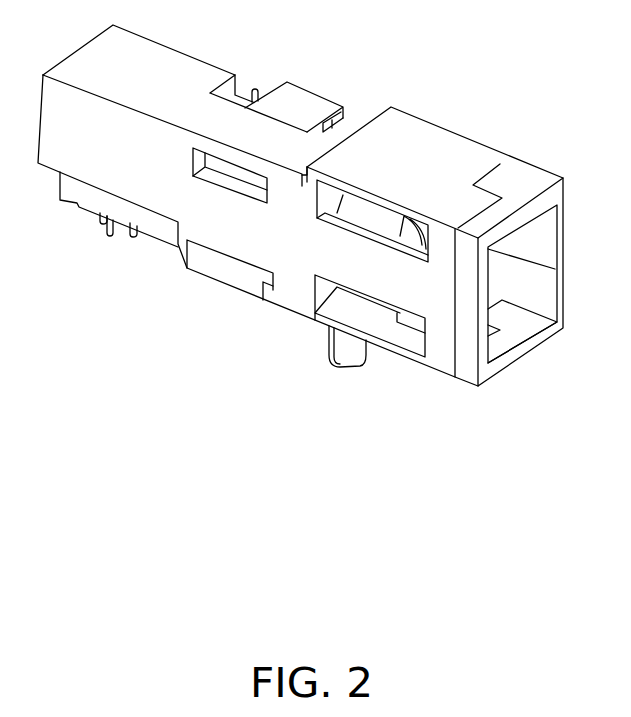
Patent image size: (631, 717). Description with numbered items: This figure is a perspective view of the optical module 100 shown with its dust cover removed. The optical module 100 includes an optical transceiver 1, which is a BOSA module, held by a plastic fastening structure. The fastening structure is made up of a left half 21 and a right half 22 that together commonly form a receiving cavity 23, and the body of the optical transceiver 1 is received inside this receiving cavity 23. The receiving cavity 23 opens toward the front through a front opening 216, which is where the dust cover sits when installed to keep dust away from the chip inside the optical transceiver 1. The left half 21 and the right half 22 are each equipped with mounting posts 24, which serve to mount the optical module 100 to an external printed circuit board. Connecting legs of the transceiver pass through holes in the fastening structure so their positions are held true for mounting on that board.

The optical module 100 is at (324, 239).
The optical transceiver 1 is at (368, 210).
The left half 21 is at (518, 182).
The right half 22 is at (297, 290).
The receiving cavity 23 is at (507, 277).
The mounting posts 24 is at (350, 347).
The front opening 216 is at (513, 328).